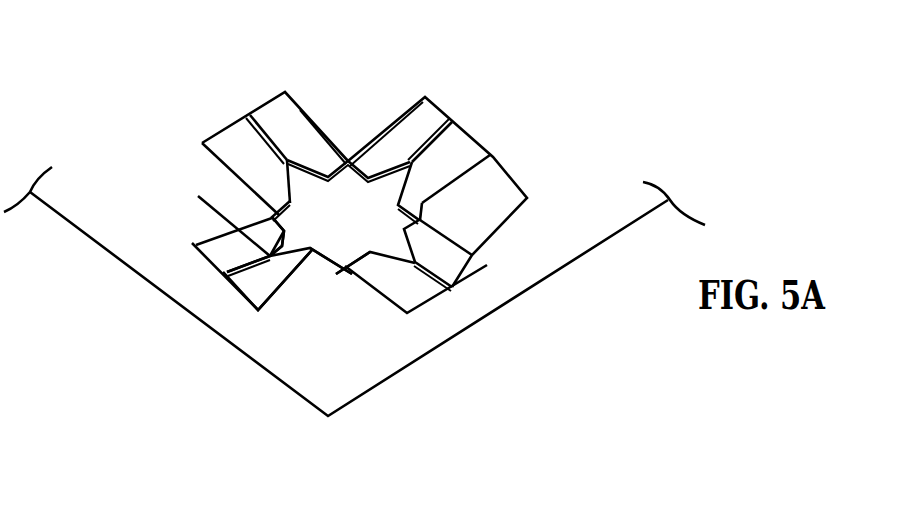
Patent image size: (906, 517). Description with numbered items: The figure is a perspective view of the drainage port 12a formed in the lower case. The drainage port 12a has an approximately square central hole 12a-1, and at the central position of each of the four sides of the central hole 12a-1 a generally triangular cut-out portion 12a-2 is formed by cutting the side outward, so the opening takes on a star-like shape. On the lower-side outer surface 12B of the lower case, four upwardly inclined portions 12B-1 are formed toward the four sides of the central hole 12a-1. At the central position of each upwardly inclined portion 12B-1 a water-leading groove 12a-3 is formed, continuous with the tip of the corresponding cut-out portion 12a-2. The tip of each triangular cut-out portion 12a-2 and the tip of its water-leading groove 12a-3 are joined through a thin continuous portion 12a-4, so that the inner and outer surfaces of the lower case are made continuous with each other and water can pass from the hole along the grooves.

The drainage port 12a is at (345, 192).
The central hole 12a-1 is at (333, 232).
The cut-out portion 12a-2 is at (297, 186).
The water-leading groove 12a-3 is at (522, 200).
The thin continuous portion 12a-4 is at (272, 255).
The lower-side outer surface 12B is at (527, 283).
The upwardly inclined portion 12B-1 is at (195, 243).